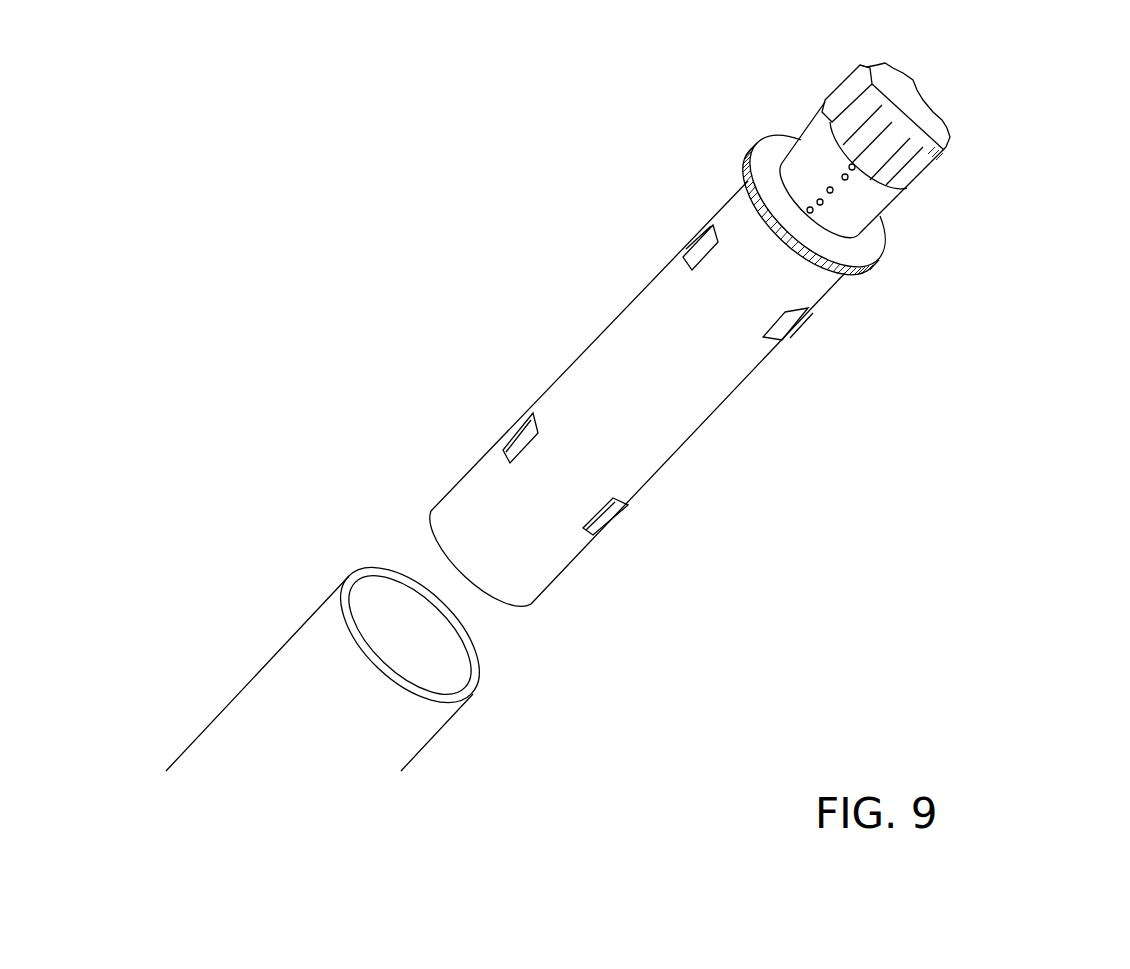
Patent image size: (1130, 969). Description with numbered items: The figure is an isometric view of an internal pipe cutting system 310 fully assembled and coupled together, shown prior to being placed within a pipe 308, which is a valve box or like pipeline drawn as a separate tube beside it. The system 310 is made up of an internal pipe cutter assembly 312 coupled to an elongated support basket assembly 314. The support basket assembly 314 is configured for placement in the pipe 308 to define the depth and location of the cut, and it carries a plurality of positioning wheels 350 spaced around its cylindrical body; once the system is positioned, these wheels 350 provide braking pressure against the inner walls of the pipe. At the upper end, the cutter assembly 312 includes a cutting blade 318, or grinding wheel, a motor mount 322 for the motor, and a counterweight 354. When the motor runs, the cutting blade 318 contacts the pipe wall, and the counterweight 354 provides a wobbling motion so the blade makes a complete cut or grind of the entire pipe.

The pipe 308 is at (243, 652).
The internal pipe cutting system 310 is at (330, 222).
The internal pipe cutter assembly 312 is at (914, 202).
The support basket assembly 314 is at (735, 415).
The cutting blade 318 is at (873, 254).
The motor mount 322 is at (817, 143).
The positioning wheels 350 is at (703, 247).
The counterweight 354 is at (851, 87).